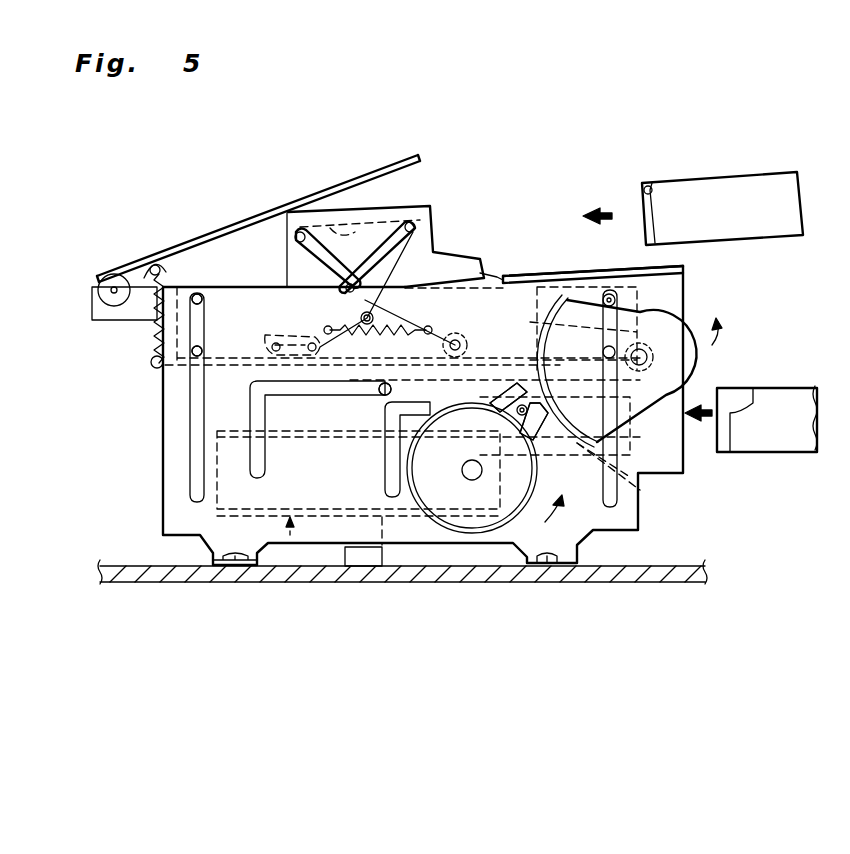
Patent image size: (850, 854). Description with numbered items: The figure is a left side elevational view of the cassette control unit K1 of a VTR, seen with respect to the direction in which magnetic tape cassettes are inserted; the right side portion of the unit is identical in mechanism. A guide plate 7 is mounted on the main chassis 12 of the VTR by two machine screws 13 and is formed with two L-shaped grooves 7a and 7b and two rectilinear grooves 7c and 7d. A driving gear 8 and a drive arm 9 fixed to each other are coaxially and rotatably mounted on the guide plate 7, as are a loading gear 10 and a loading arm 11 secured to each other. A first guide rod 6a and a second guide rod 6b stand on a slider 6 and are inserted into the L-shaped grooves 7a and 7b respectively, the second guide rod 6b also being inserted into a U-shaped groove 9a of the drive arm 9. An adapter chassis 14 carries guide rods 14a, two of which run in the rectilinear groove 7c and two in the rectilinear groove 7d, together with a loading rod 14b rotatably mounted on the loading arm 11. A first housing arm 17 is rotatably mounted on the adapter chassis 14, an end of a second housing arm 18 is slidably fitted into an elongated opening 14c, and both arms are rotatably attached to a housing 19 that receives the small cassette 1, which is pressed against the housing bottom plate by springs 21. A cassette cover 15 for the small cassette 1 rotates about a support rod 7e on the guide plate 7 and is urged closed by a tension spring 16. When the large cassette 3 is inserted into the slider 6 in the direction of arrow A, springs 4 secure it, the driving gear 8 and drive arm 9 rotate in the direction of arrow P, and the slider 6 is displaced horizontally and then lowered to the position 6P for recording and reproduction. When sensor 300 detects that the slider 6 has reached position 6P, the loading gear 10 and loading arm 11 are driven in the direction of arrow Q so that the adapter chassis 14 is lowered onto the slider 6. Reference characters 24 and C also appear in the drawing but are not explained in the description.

The small cassette 1 is at (768, 195).
The large cassette 3 is at (790, 440).
The springs 4 is at (382, 566).
The slider 6 is at (640, 490).
The position for performing recording and reproduction 6P is at (290, 535).
The first guide rod 6a is at (383, 396).
The second guide rod 6b is at (520, 418).
The guide plate 7 is at (670, 283).
The L-shaped groove 7a is at (390, 467).
The L-shaped groove 7b is at (250, 410).
The rectilinear groove 7c is at (197, 415).
The rectilinear groove 7d is at (613, 435).
The support rod 7e is at (110, 285).
The driving gear 8 is at (442, 497).
The drive arm 9 is at (535, 420).
The U-shaped groove 9a is at (520, 440).
The loading gear 10 is at (580, 322).
The loading arm 11 is at (508, 330).
The main chassis 12 is at (126, 582).
The machine screws 13 is at (222, 563).
The adapter chassis 14 is at (223, 317).
The guide rods 14a is at (195, 352).
The loading rod 14b is at (290, 280).
The elongated opening 14c is at (280, 338).
The cassette cover 15 is at (380, 168).
The tension spring 16 is at (155, 333).
The first housing arm 17 is at (343, 267).
The second housing arm 18 is at (447, 273).
The housing 19 is at (484, 300).
The springs 21 is at (322, 192).
The top plate 24 is at (625, 266).
The sensor 300 is at (367, 566).
The cassette control unit K1 is at (700, 112).
The direction C is at (604, 210).
The arrow A is at (706, 418).
The arrow Q is at (712, 345).
The arrow P is at (565, 515).